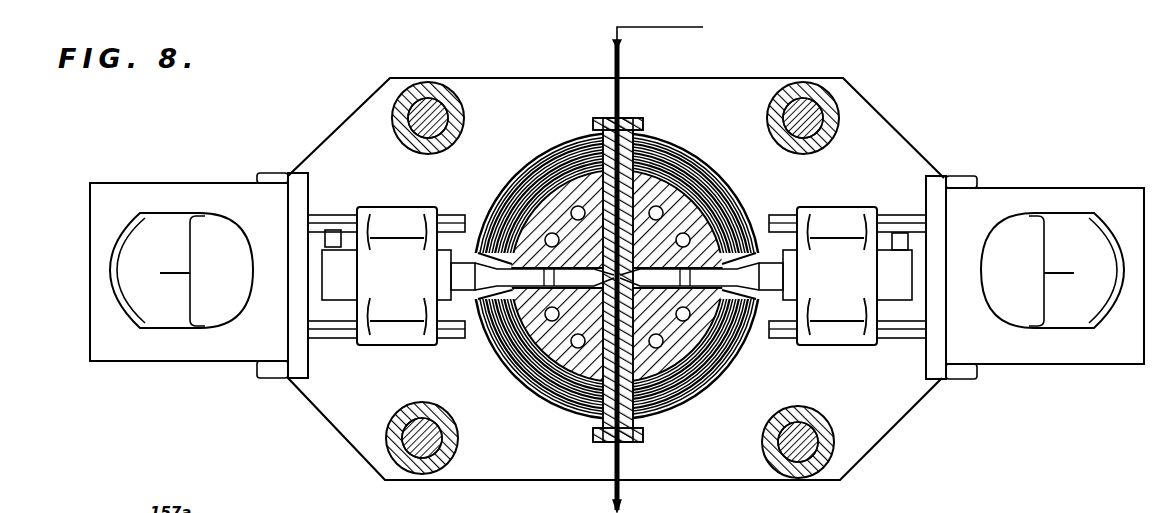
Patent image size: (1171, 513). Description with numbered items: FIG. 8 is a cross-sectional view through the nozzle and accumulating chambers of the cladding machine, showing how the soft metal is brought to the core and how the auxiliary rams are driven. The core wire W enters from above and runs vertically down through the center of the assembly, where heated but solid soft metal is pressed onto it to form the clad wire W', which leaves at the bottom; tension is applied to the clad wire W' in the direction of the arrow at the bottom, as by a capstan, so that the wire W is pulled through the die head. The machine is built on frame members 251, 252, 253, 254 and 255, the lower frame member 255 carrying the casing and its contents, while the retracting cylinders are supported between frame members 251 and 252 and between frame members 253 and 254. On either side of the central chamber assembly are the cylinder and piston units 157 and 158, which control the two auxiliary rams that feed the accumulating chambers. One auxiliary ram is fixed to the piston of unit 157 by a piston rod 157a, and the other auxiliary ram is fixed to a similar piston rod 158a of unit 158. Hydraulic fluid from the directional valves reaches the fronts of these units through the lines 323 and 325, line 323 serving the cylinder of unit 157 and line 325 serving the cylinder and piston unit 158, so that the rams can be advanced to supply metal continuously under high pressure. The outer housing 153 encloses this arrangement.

The housing frame 153 is at (543, 66).
The frame member 251 is at (454, 140).
The frame member 252 is at (459, 439).
The frame member 253 is at (826, 426).
The frame member 254 is at (816, 147).
The lower frame member 255 is at (540, 482).
The cylinder and piston unit 157 is at (198, 247).
The cylinder and piston unit 158 is at (1046, 266).
The piston rod 157a is at (338, 274).
The piston rod 158a is at (870, 282).
The line 323 is at (325, 238).
The line 325 is at (905, 243).
The wire W is at (718, 264).
The clad wire W' is at (593, 500).